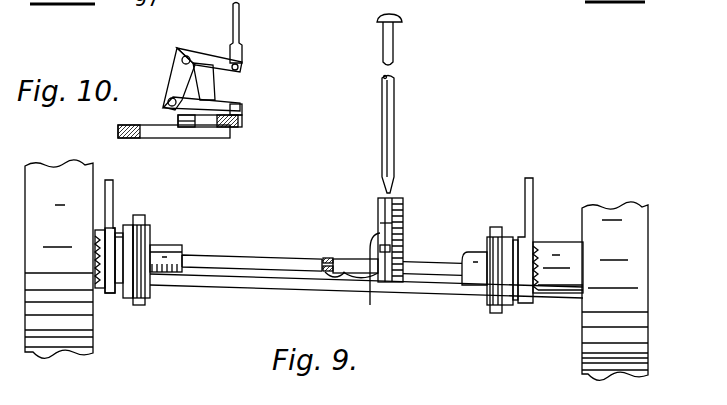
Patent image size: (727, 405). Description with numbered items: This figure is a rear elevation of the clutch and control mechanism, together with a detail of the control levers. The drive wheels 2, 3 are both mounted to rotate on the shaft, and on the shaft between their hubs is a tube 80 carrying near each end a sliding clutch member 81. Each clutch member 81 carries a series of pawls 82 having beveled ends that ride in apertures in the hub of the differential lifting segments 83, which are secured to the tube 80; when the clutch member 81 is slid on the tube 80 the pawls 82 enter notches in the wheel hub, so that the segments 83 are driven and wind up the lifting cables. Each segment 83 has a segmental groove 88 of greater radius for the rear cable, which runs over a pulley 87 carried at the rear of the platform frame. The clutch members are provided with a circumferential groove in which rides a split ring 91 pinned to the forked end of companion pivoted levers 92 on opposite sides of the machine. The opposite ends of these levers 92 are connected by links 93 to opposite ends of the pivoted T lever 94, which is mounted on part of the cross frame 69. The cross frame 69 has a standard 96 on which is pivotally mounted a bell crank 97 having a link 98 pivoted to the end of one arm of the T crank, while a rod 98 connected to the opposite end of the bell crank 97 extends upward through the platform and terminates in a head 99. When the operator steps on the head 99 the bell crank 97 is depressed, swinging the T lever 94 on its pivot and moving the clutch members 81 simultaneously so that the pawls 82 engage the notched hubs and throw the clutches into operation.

In FIG. 9, the drive wheel 2 is at (59, 259).
In FIG. 9, the drive wheel 3 is at (615, 291).
In FIG. 10, the cross frame 69 is at (128, 125).
In FIG. 9, the cross frame 69 is at (288, 282).
In FIG. 9, the tube 80 is at (180, 247).
In FIG. 9, the sliding clutch member 81 is at (128, 290).
In FIG. 9, the pawl 82 is at (116, 283).
In FIG. 9, the differential lifting segment 83 is at (112, 228).
In FIG. 9, the pulley 87 is at (485, 302).
In FIG. 9, the segmental groove 88 is at (108, 182).
In FIG. 9, the split ring 91 is at (139, 244).
In FIG. 9, the pivoted lever 92 is at (143, 214).
In FIG. 9, the link 93 is at (278, 258).
In FIG. 10, the T lever 94 is at (210, 118).
In FIG. 9, the T lever 94 is at (355, 260).
In FIG. 10, the standard 96 is at (212, 87).
In FIG. 9, the standard 96 is at (404, 240).
In FIG. 10, the bell crank 97 is at (175, 62).
In FIG. 9, the bell crank 97 is at (378, 282).
In FIG. 10, the link 98 is at (241, 38).
In FIG. 9, the link 98 is at (394, 115).
In FIG. 9, the head 99 is at (402, 22).